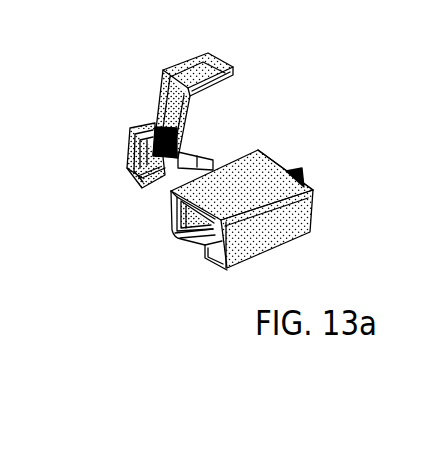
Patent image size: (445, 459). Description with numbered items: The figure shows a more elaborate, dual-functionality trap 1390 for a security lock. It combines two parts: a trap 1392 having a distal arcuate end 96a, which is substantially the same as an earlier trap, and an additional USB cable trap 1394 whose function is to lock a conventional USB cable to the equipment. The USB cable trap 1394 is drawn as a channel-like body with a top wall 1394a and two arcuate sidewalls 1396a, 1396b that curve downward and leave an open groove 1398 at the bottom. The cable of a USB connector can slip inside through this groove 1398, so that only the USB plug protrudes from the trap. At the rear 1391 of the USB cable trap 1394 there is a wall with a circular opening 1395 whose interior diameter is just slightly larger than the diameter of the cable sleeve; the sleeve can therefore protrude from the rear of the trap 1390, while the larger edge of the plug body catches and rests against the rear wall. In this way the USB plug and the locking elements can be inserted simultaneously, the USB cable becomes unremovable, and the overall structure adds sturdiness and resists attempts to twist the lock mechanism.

The trap 1392 is at (150, 103).
The distal arcuate end 96a is at (220, 65).
The dual-functionality trap 1390 is at (288, 118).
The rear 1391 is at (290, 166).
The USB cable trap 1394 is at (303, 220).
The top wall 1394a is at (308, 176).
The circular opening 1395 is at (175, 232).
The arcuate sidewall 1396a is at (243, 253).
The arcuate sidewall 1396b is at (172, 200).
The groove 1398 is at (200, 245).